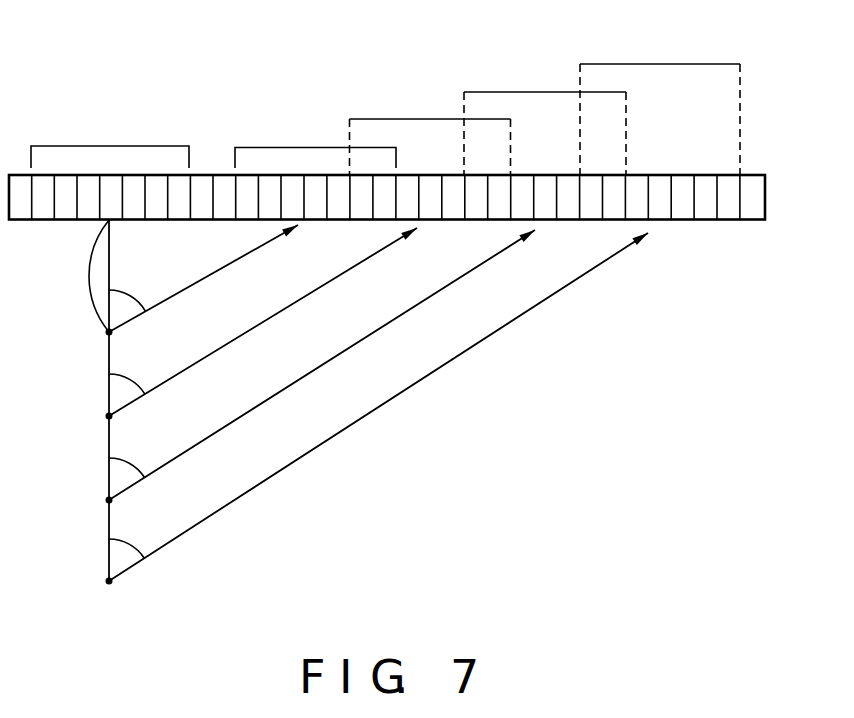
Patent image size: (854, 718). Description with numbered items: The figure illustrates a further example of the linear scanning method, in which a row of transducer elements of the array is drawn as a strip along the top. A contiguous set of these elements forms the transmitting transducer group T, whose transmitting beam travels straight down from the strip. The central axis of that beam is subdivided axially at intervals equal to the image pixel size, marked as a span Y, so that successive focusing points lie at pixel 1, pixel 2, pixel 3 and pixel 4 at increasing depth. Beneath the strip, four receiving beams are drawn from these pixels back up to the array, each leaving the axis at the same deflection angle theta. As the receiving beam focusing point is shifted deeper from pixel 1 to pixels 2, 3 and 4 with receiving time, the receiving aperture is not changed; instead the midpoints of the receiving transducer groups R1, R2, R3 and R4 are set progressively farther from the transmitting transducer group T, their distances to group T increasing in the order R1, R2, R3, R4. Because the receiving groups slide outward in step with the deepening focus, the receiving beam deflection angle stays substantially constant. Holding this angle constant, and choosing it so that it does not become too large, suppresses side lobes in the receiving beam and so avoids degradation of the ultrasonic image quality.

The transmitting transducer group T is at (110, 140).
The receiving transducer group R1 is at (315, 142).
The receiving transducer group R2 is at (430, 131).
The receiving transducer group R3 is at (545, 116).
The receiving transducer group R4 is at (660, 104).
The image pixel size Y is at (77, 276).
The pixel 1 is at (159, 282).
The pixel 2 is at (218, 325).
The pixel 3 is at (277, 368).
The pixel 4 is at (334, 412).